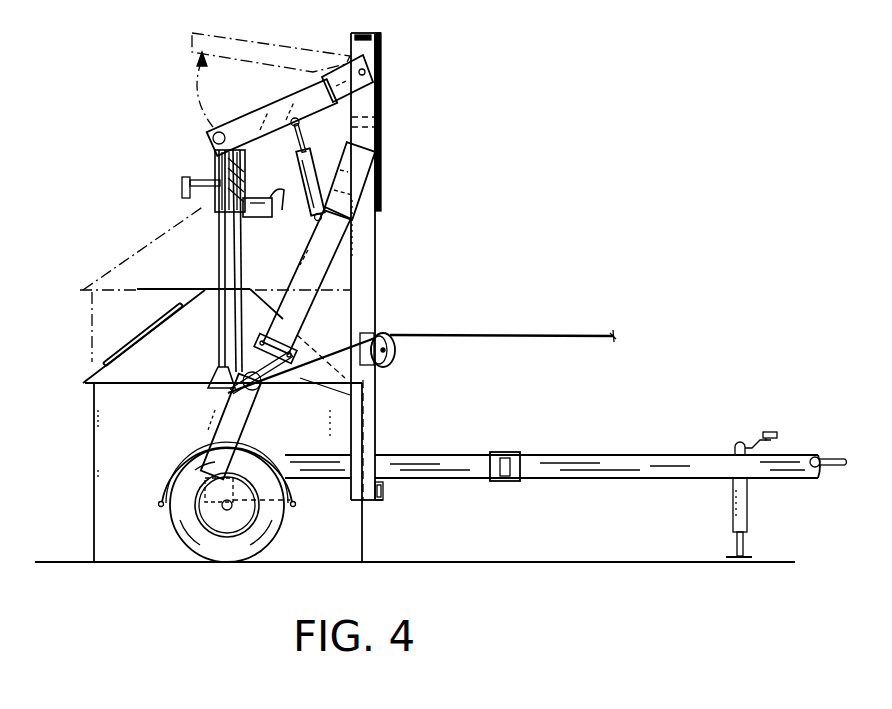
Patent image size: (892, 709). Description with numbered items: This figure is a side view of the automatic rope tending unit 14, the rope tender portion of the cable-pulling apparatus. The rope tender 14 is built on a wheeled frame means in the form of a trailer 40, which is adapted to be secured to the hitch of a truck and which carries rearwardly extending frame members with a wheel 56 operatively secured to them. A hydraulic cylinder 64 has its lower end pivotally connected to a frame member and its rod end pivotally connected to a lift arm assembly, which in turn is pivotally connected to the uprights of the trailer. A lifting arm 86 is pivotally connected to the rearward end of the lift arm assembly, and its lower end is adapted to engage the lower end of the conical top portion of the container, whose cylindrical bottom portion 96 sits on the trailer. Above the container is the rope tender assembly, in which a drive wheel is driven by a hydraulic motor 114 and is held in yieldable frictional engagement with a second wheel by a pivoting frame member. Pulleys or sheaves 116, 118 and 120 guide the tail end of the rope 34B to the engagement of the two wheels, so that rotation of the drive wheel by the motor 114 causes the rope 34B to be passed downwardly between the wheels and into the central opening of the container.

The automatic rope tending unit 14 is at (450, 190).
The tail end of the rope 34B is at (512, 334).
The trailer 40 is at (586, 450).
The wheel 56 is at (187, 523).
The hydraulic cylinder 64 is at (300, 166).
The lifting arm 86 is at (221, 279).
The cylindrical bottom portion 96 is at (175, 434).
The hydraulic motor 114 is at (263, 218).
The pulley or sheave 116 is at (387, 342).
The pulley or sheave 118 is at (260, 382).
The pulley or sheave 120 is at (236, 134).